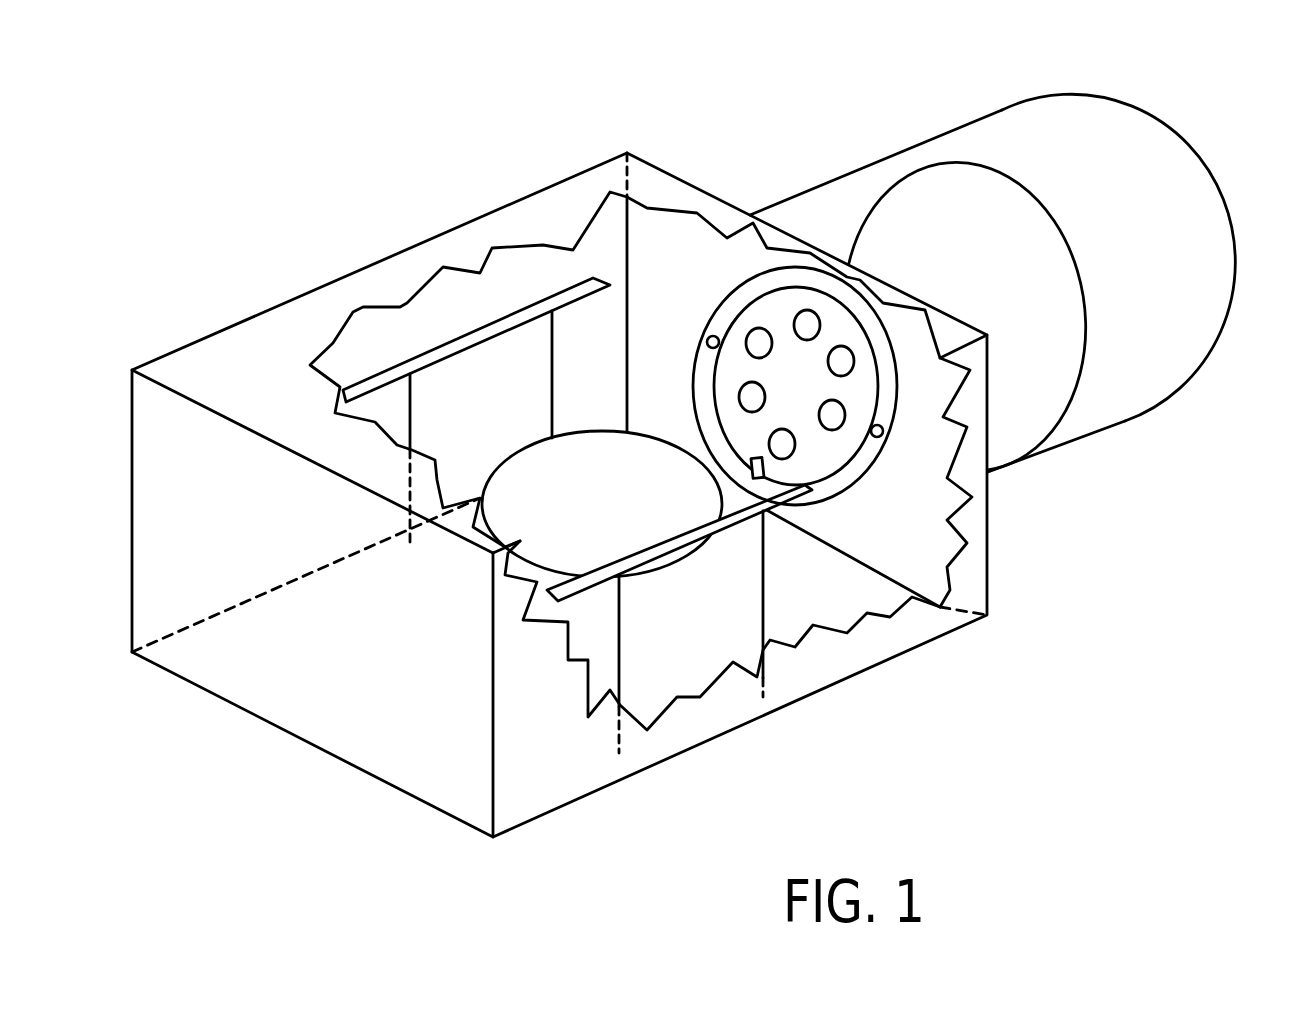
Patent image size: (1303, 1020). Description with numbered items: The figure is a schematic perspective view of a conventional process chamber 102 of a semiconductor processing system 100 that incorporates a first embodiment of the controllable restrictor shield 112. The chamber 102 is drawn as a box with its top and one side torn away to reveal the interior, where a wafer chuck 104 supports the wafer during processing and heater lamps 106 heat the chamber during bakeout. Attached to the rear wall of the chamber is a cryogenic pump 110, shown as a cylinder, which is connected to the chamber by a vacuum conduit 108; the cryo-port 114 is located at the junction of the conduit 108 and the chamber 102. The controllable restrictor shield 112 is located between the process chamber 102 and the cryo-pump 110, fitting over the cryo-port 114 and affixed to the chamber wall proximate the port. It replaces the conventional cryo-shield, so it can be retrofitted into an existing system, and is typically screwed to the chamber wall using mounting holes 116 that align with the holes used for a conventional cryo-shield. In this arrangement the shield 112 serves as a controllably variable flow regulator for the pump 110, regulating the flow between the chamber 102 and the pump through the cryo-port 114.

The semiconductor processing system 100 is at (1188, 142).
The process chamber 102 is at (880, 665).
The wafer chuck 104 is at (597, 429).
The heater lamps 106 is at (470, 330).
The vacuum conduit 108 is at (1008, 438).
The cryogenic pump 110 is at (1157, 280).
The controllable restrictor shield 112 is at (723, 273).
The cryo-port 114 is at (897, 397).
The mounting holes 116 is at (709, 341).